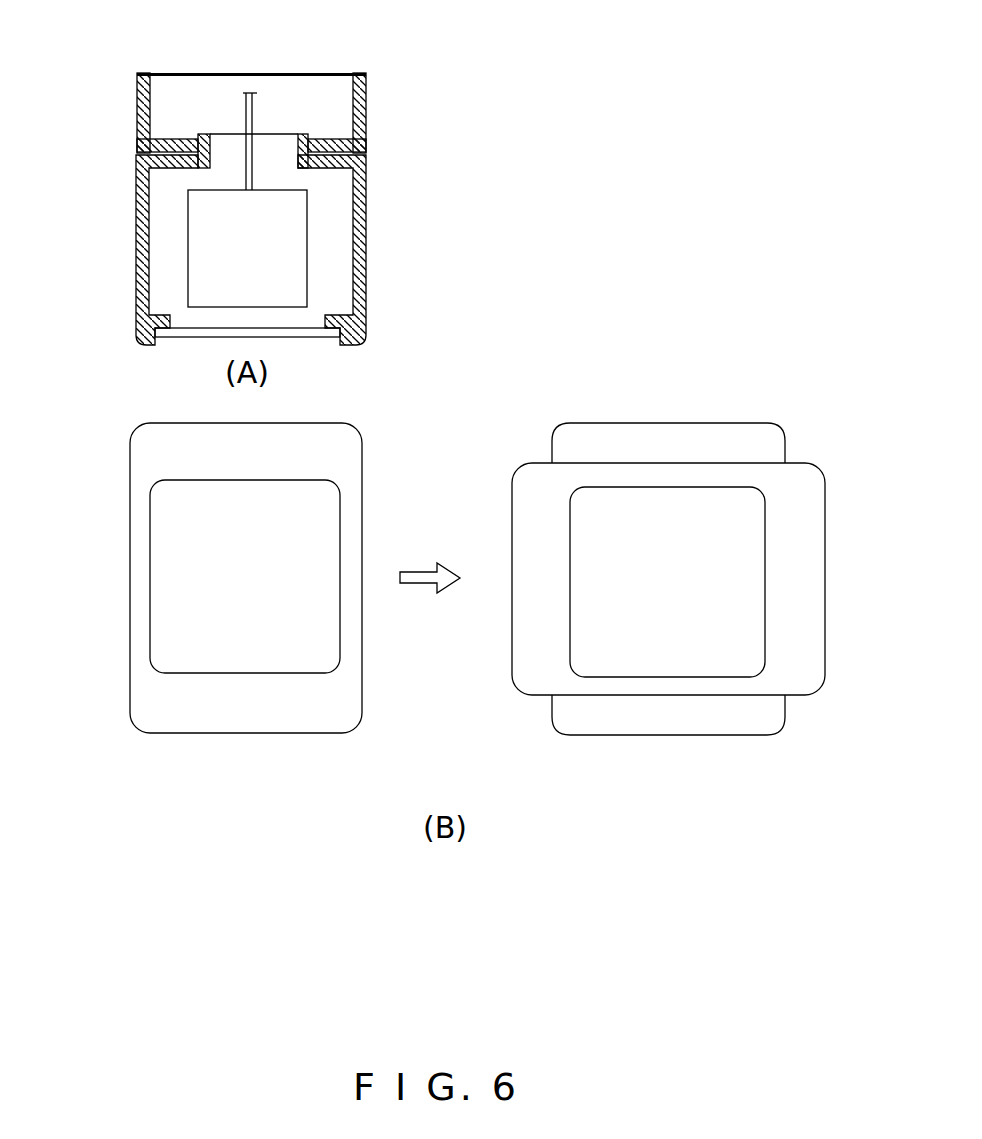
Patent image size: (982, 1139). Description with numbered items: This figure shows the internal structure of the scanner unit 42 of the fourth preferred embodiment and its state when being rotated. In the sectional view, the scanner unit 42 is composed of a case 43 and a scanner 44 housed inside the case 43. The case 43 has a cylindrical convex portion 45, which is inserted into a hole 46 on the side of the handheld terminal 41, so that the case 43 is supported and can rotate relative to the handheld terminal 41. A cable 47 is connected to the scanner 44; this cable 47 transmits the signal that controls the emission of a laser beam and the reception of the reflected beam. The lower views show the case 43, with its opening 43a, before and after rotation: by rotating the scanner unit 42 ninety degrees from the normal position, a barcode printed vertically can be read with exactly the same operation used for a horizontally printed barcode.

The handheld terminal 41 is at (481, 367).
The scanner unit 42 is at (473, 405).
The case 43 is at (136, 226).
The bottom plate / opening 43a is at (318, 338).
The scanner 44 is at (307, 242).
The cylindrical convex portion 45 is at (204, 146).
The hole 46 is at (272, 145).
The cable 47 is at (242, 101).